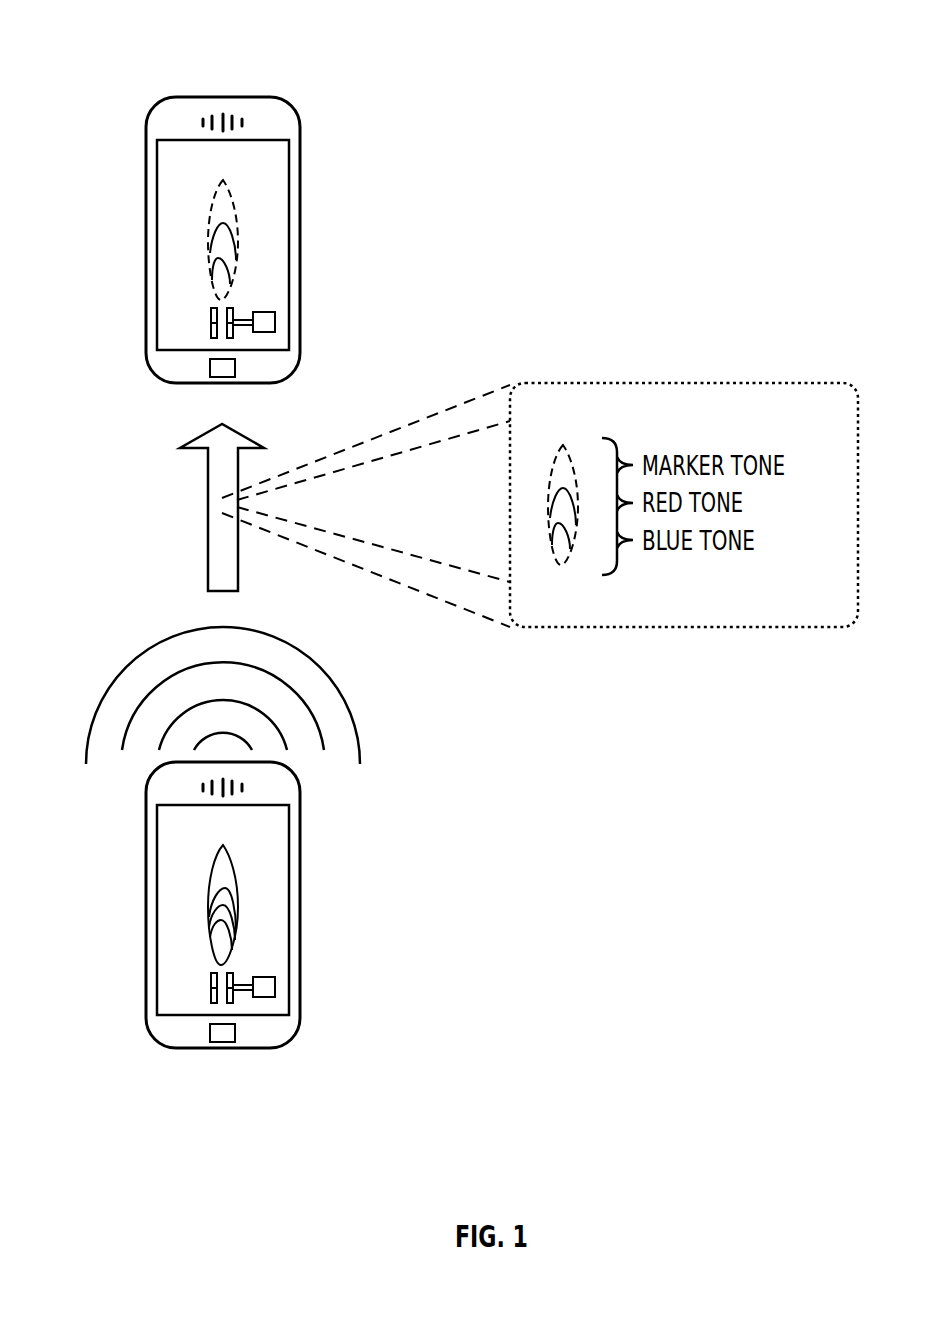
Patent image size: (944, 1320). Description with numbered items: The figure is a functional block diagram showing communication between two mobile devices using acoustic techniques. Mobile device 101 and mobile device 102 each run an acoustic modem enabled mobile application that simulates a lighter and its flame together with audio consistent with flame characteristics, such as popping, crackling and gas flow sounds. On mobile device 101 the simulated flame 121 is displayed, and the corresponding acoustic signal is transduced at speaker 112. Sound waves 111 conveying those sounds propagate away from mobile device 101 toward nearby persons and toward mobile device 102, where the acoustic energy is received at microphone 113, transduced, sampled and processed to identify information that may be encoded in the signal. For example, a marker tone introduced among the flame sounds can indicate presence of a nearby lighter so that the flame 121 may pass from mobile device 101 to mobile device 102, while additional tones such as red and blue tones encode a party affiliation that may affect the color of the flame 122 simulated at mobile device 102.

The mobile device 101 is at (300, 950).
The mobile device 102 is at (176, 97).
The sound waves 111 is at (343, 692).
The speaker 112 is at (255, 787).
The microphone 113 is at (236, 366).
The flame 121 is at (186, 896).
The flame 122 is at (183, 222).